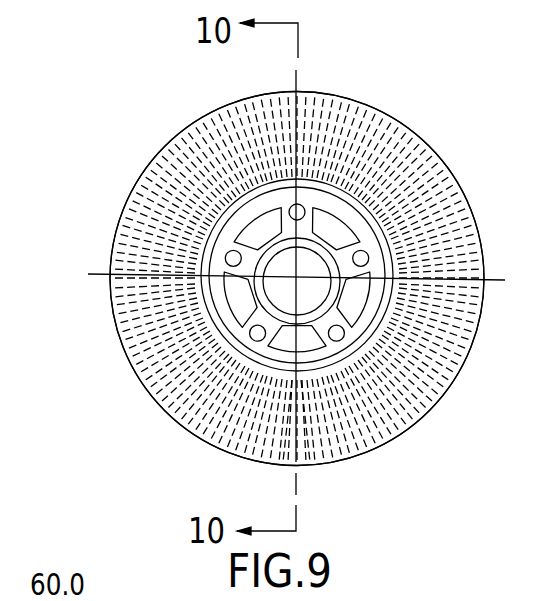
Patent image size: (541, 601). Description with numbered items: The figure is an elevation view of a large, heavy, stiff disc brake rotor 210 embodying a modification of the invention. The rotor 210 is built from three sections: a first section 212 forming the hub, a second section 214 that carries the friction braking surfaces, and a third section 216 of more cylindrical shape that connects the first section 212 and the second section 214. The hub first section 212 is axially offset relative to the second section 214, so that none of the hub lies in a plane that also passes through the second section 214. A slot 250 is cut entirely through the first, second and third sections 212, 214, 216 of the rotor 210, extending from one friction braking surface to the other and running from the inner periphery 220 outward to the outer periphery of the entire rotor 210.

The rotor 210 is at (374, 110).
The first section 212 is at (226, 258).
The second section 214 is at (122, 348).
The third section 216 is at (200, 308).
The inner periphery 220 is at (268, 242).
The slot 250 is at (293, 410).